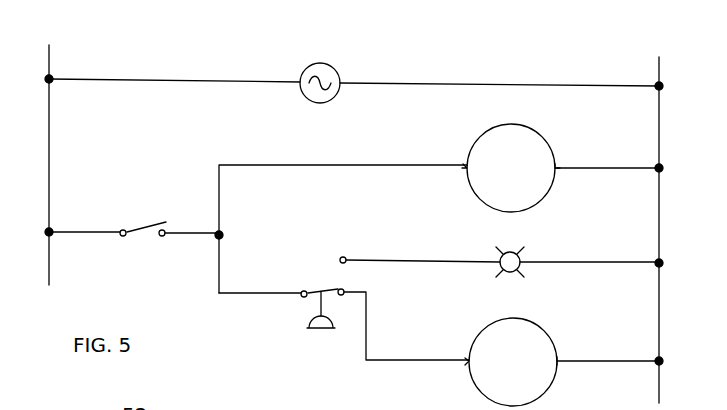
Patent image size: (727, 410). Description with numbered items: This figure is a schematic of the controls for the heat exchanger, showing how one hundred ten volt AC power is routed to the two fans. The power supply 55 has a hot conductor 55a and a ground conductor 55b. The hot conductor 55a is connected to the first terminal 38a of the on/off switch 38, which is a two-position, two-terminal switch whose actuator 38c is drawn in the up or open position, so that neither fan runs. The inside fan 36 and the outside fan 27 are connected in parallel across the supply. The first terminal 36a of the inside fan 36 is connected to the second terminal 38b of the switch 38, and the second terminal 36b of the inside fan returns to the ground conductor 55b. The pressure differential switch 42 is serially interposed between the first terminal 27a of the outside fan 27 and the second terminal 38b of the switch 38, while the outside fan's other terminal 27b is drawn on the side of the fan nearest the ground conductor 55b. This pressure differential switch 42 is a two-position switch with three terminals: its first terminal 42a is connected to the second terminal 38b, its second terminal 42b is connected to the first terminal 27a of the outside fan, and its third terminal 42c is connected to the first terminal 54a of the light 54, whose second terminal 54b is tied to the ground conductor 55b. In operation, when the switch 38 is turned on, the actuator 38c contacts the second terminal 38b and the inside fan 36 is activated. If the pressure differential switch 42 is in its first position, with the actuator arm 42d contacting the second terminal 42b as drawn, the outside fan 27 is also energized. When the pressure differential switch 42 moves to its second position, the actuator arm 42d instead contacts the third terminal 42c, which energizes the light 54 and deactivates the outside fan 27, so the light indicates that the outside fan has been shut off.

The 110 volt power supply 55 is at (336, 95).
The hot conductor 55a is at (49, 147).
The ground conductor 55b is at (661, 145).
The inside fan 36 is at (520, 140).
The first terminal of the fan 36a is at (465, 166).
The second terminal of the inside fan 36b is at (552, 150).
The on/off switch 38 is at (134, 238).
The first terminal of switch 38a is at (120, 237).
The second terminal of the switch 38b is at (163, 237).
The actuator 38c is at (155, 222).
The pressure differential switch 42 is at (359, 296).
The first terminal 42a is at (301, 292).
The second terminal 42b is at (345, 290).
The third terminal 42c is at (343, 257).
The actuator arm 42d is at (327, 289).
The light 54 is at (514, 258).
The first terminal of the light 54a is at (499, 254).
The second terminal of the light 54b is at (522, 270).
The outside fan 27 is at (540, 338).
The first terminal of the outside fan 27a is at (467, 368).
The motor terminal 27b is at (558, 365).